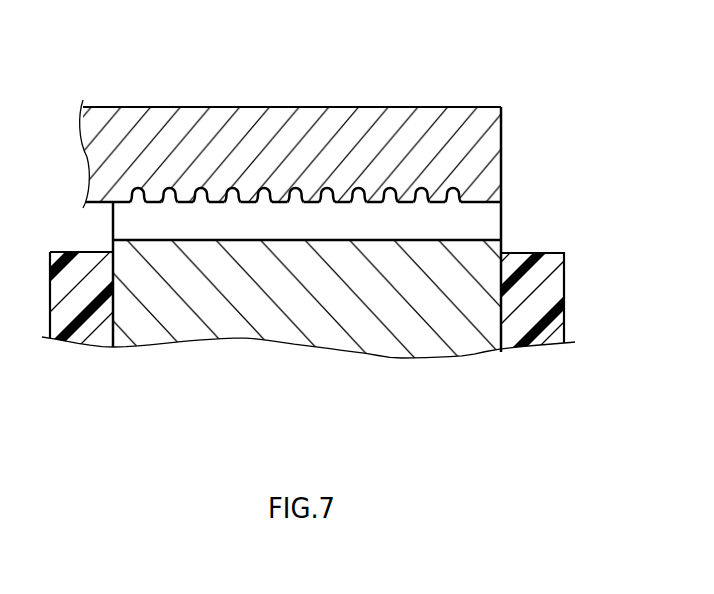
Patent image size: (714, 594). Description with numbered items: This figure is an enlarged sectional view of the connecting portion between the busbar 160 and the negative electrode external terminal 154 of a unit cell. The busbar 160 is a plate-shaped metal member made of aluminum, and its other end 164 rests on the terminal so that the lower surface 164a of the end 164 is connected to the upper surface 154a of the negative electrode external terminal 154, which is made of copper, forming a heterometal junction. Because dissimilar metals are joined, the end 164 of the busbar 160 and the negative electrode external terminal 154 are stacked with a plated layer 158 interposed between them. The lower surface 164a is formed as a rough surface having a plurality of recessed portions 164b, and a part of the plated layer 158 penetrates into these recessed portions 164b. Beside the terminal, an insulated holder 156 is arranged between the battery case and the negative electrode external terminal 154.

The busbar 160 is at (354, 218).
The other end of the busbar 164 is at (354, 221).
The lower surface of the other end of the busbar 164a is at (484, 202).
The recessed portions 164b is at (419, 201).
The plated layer 158 is at (490, 228).
The insulated holder 156 is at (563, 277).
The negative electrode external terminal 154 is at (308, 321).
The upper surface of the negative electrode external terminal 154a is at (288, 241).